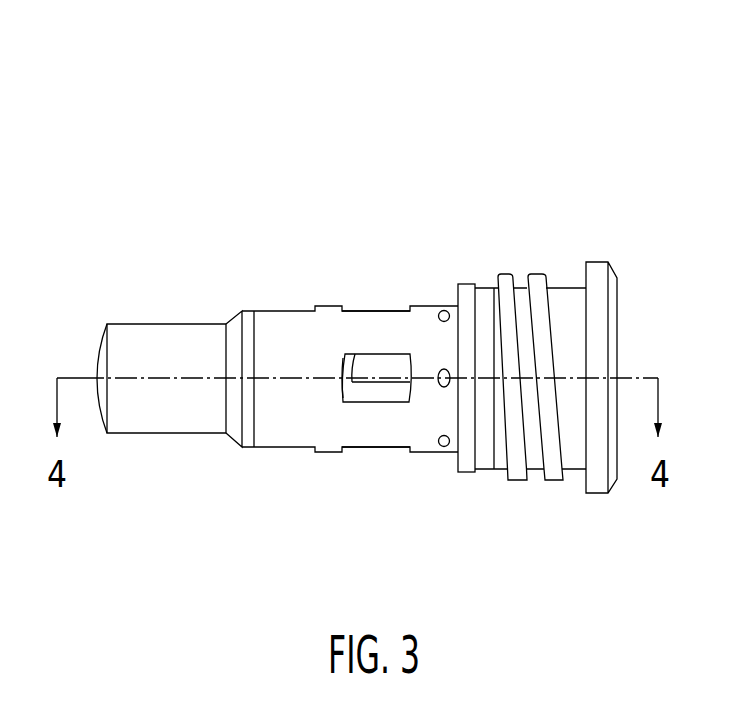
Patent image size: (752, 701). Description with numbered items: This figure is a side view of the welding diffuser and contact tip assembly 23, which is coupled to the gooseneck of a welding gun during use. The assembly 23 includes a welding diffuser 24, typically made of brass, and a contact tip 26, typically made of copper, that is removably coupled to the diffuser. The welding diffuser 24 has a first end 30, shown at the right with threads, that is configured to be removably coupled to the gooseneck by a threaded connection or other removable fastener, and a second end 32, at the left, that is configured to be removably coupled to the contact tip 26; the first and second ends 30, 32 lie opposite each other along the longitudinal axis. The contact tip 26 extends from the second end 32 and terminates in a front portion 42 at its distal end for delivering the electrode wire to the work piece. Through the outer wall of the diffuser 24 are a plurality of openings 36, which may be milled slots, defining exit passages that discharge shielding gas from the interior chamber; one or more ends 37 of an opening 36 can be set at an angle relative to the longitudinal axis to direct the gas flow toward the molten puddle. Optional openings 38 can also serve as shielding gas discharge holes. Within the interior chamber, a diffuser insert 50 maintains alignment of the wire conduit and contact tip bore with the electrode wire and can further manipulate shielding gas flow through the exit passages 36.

The welding diffuser and contact tip assembly 23 is at (232, 130).
The welding diffuser 24 is at (277, 432).
The contact tip 26 is at (180, 418).
The first end 30 is at (605, 223).
The second end 32 is at (232, 307).
The openings 36 is at (400, 298).
The end of the opening 37 is at (345, 369).
The optional openings 38 is at (447, 298).
The front portion 42 is at (108, 307).
The diffuser insert 50 is at (373, 367).